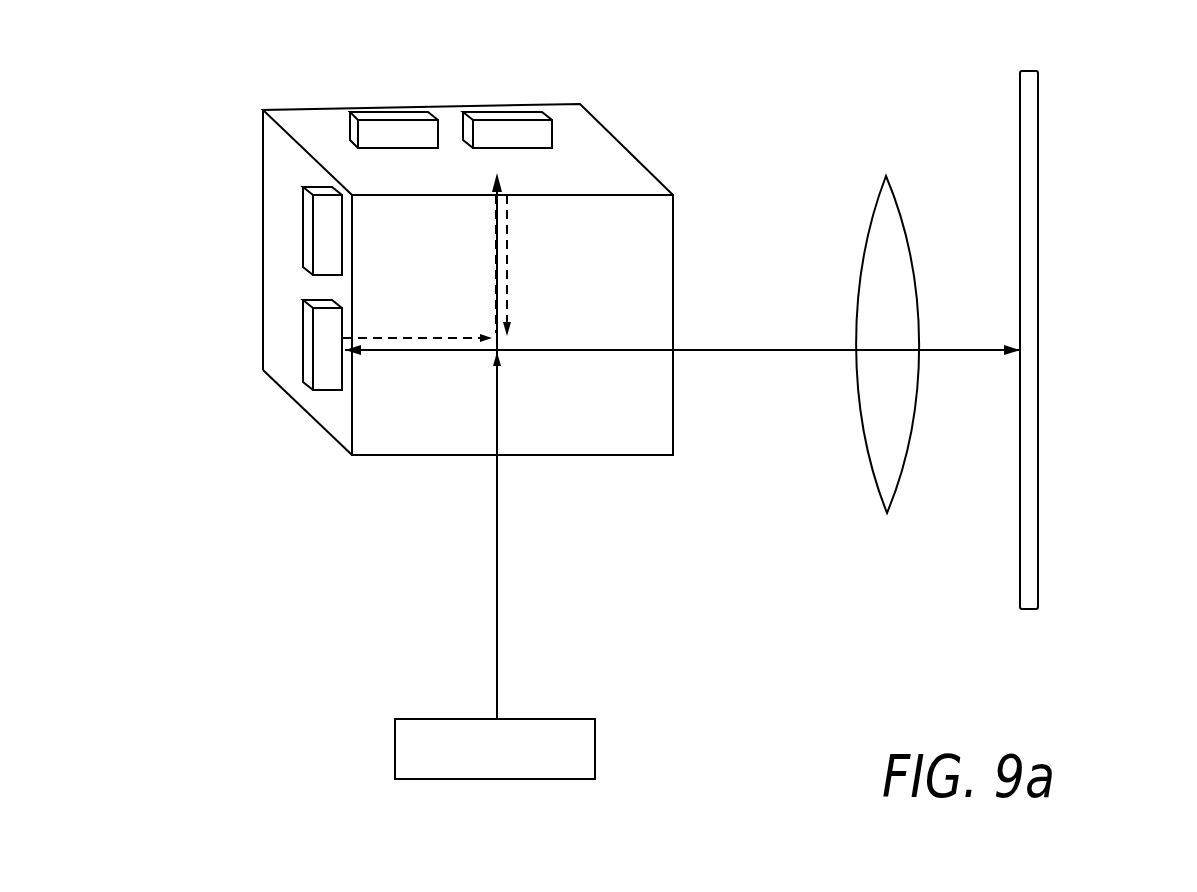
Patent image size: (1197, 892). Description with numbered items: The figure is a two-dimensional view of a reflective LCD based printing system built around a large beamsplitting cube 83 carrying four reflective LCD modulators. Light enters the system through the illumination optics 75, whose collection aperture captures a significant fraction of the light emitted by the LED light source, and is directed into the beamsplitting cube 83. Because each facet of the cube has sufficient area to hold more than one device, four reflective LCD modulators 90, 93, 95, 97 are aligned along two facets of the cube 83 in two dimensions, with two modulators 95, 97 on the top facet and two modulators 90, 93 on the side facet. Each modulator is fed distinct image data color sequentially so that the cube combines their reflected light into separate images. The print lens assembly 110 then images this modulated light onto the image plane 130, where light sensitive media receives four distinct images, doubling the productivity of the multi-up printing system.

The illumination optics 75 is at (437, 719).
The large beamsplitting cube 83 is at (613, 162).
The reflective LCD modulator 90 is at (307, 365).
The reflective LCD modulator 93 is at (307, 213).
The reflective LCD modulator 95 is at (383, 112).
The reflective LCD modulator 97 is at (503, 114).
The print lens assembly 110 is at (874, 213).
The image plane 130 is at (1029, 150).